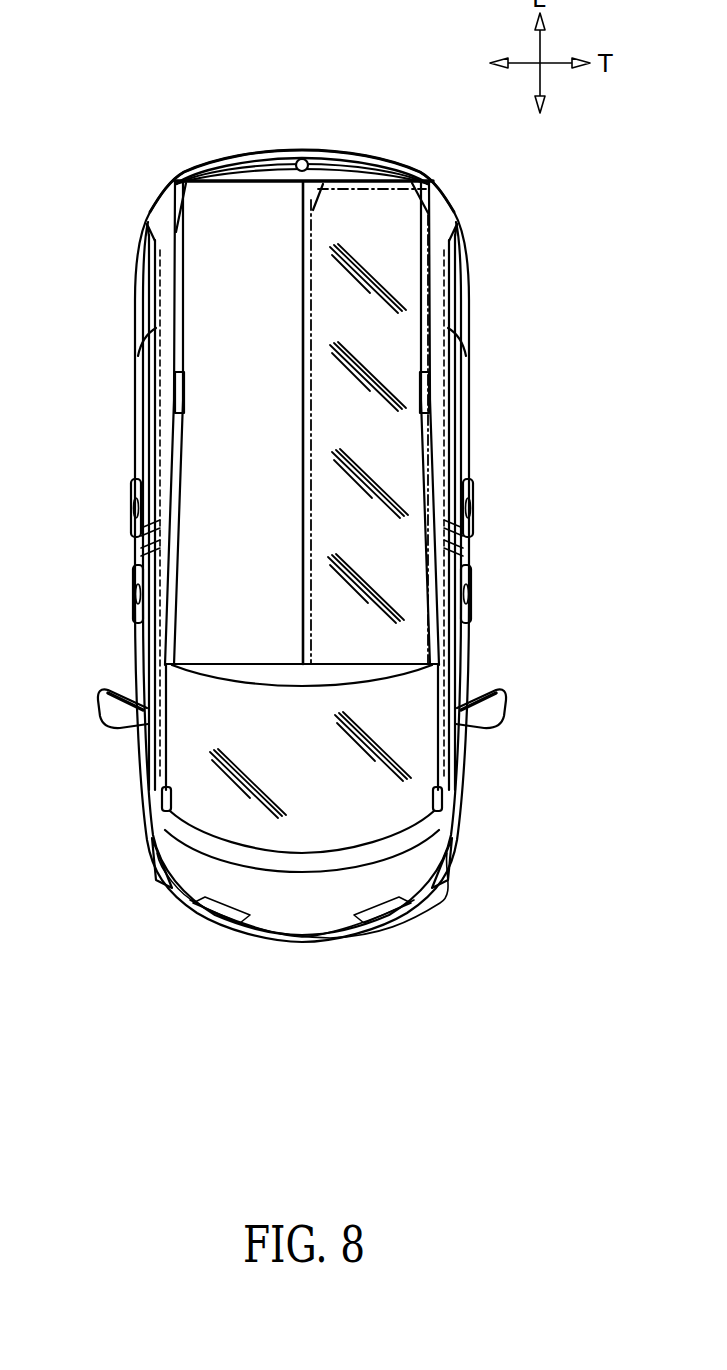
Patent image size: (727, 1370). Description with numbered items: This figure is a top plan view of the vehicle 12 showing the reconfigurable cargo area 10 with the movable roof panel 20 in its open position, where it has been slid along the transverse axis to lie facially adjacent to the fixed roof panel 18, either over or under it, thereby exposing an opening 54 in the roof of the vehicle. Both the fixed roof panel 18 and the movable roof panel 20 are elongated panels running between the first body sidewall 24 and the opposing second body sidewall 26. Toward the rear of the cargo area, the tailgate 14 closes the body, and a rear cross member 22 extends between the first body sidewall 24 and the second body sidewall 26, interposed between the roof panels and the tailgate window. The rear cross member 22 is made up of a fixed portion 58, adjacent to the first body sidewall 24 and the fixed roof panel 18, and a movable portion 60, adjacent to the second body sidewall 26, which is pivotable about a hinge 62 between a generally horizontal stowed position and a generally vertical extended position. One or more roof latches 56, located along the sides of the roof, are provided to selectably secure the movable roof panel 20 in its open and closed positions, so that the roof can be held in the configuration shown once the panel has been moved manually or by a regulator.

The reconfigurable cargo area 10 is at (262, 45).
The vehicle 12 is at (191, 955).
The tailgate 14 is at (372, 137).
The fixed roof panel 18 is at (432, 200).
The movable roof panel 20 is at (318, 207).
The rear cross member 22 is at (397, 149).
The first body sidewall 24 is at (445, 221).
The second body sidewall 26 is at (172, 216).
The opening 54 is at (200, 202).
The roof latches 56 is at (176, 392).
The fixed portion 58 is at (405, 170).
The movable portion 60 is at (252, 165).
The hinge 62 is at (303, 159).